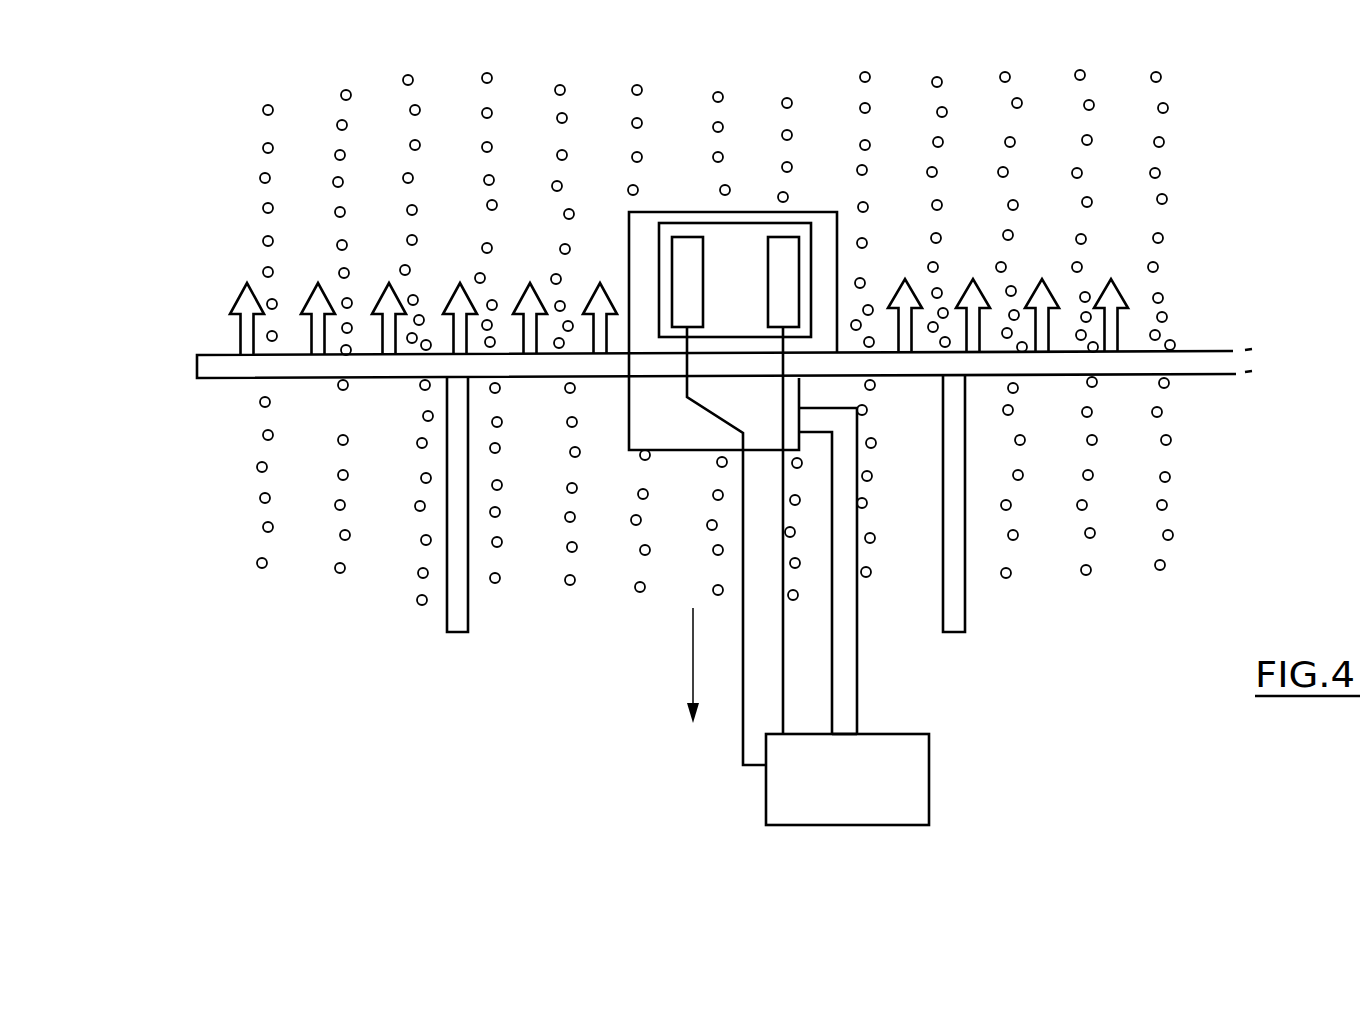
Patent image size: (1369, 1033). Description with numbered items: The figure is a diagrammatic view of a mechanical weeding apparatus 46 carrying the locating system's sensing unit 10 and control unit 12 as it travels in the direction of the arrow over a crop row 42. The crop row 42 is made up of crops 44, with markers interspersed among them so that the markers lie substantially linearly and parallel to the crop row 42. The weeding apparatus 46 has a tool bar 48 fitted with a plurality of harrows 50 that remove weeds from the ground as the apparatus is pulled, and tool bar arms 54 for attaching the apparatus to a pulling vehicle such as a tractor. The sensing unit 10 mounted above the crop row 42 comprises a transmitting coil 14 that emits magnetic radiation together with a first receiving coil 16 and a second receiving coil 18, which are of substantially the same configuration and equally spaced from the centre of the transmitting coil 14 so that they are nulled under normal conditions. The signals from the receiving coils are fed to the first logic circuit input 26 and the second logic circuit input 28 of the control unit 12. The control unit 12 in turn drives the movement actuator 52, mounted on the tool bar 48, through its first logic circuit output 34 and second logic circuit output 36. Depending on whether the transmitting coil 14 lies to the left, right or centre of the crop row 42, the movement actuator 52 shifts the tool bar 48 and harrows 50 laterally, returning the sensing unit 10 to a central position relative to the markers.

The sensing unit 10 is at (775, 270).
The control unit 12 is at (930, 772).
The transmitting coil 14 is at (799, 212).
The first receiving coil 16 is at (686, 240).
The second receiving coil 18 is at (800, 255).
The first logic circuit input 26 is at (763, 768).
The second logic circuit input 28 is at (783, 732).
The first logic circuit output 34 is at (858, 732).
The second logic circuit output 36 is at (860, 732).
The crop row 42 is at (647, 88).
The crops 44 is at (407, 78).
The mechanical weeding apparatus 46 is at (312, 587).
The tool bar 48 is at (230, 370).
The harrows 50 is at (1115, 292).
The movement actuator 52 is at (684, 428).
The tool bar arms 54 is at (458, 600).